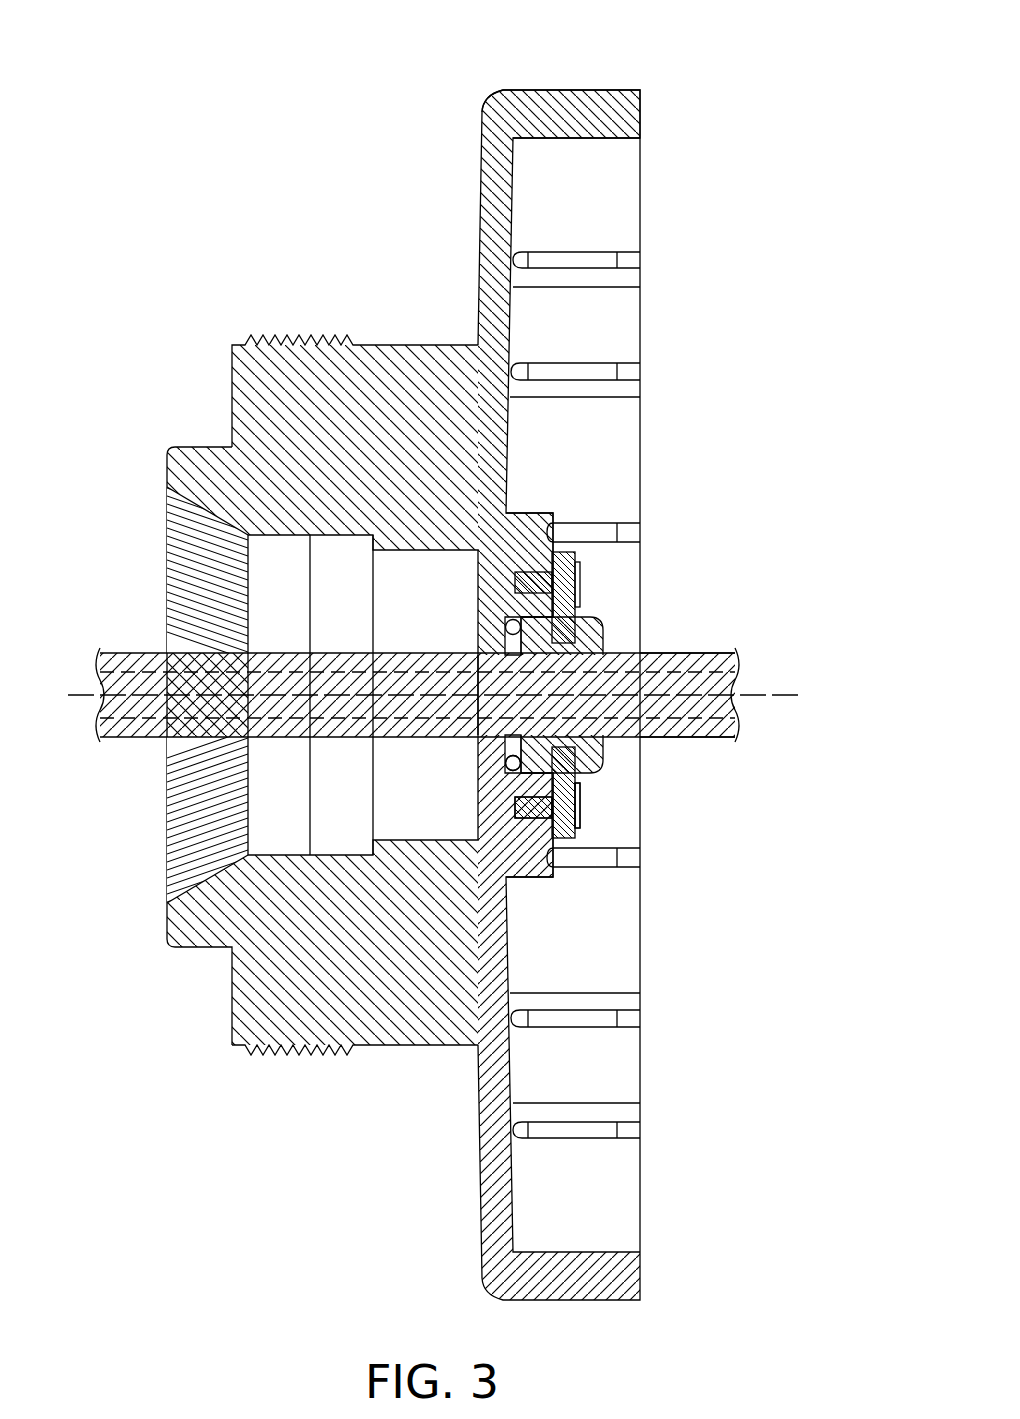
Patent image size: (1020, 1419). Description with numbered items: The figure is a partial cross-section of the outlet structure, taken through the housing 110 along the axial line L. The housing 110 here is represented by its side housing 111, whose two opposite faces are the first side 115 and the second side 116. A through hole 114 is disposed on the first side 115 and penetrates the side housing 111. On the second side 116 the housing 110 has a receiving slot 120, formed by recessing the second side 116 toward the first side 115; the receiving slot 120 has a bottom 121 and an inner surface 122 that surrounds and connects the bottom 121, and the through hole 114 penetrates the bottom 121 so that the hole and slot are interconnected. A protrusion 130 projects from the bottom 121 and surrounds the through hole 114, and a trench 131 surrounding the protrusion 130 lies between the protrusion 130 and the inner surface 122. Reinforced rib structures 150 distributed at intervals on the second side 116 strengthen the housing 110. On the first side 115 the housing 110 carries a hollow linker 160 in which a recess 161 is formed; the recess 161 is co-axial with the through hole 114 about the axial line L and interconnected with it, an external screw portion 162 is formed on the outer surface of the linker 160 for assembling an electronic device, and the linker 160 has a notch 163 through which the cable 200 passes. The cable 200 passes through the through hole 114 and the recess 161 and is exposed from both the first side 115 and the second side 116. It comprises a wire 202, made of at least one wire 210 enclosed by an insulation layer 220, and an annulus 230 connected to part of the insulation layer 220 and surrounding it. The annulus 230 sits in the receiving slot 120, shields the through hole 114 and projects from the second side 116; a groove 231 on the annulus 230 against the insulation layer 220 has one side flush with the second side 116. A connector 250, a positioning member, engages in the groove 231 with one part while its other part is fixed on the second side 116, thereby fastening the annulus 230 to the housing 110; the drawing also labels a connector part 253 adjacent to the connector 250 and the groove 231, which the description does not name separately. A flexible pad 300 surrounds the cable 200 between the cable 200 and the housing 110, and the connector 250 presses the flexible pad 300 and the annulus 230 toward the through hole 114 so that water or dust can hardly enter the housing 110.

The housing 110 is at (537, 667).
The side housing 111 is at (531, 98).
The through hole 114 is at (497, 648).
The first side 115 is at (347, 556).
The second side 116 is at (560, 538).
The receiving slot 120 is at (440, 960).
The bottom 121 is at (505, 770).
The inner surface 122 is at (556, 790).
The protrusion 130 is at (614, 653).
The trench 131 is at (513, 617).
The reinforced rib structures 150 is at (630, 262).
The linker 160 is at (200, 928).
The recess 161 is at (270, 749).
The external screw portion 162 is at (262, 1052).
The notch 163 is at (172, 578).
The cable 200 is at (693, 786).
The wire 202 is at (726, 765).
The wire 210 is at (698, 722).
The insulation layer 220 is at (652, 730).
The annulus 230 is at (582, 805).
The groove 231 is at (600, 652).
The connector 250 is at (593, 768).
The bolt head 253 is at (577, 580).
The flexible pad 300 is at (420, 740).
The axial line L is at (786, 690).